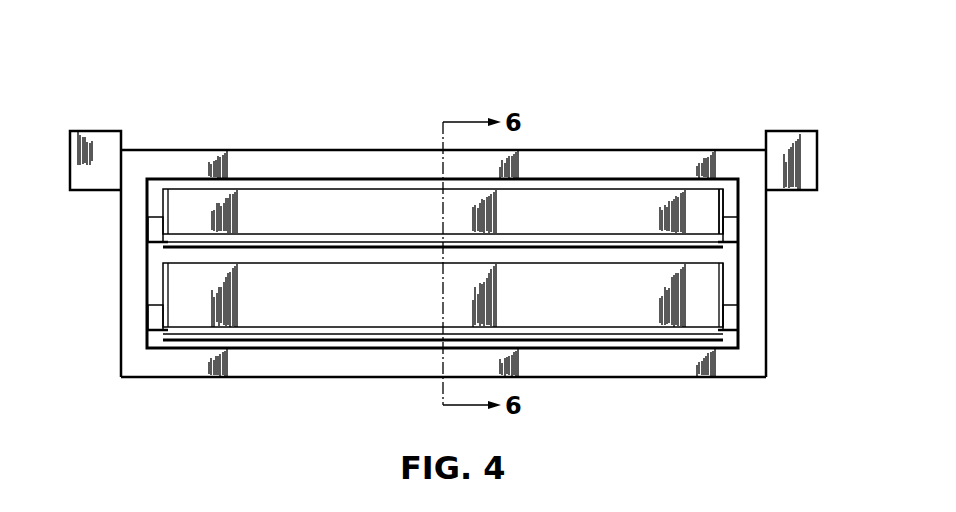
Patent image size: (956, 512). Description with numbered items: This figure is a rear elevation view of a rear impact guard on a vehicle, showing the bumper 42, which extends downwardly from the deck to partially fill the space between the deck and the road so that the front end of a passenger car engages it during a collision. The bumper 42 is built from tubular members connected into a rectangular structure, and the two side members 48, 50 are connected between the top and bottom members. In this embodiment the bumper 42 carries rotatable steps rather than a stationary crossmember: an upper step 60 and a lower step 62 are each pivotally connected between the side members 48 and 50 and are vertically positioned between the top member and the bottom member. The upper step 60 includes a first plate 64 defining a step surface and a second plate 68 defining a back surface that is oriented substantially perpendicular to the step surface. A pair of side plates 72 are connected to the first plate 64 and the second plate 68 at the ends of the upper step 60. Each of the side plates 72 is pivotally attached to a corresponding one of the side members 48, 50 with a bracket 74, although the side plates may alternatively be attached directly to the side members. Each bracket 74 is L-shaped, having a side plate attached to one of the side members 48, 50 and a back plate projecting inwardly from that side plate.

The bumper 42 is at (446, 238).
The side member 48 is at (137, 265).
The side member 50 is at (753, 352).
The upper step 60 is at (493, 203).
The lower step 62 is at (443, 301).
The first plate 64 is at (703, 208).
The second plate 68 is at (692, 252).
The side plate 72 is at (722, 206).
The bracket 74 is at (155, 228).